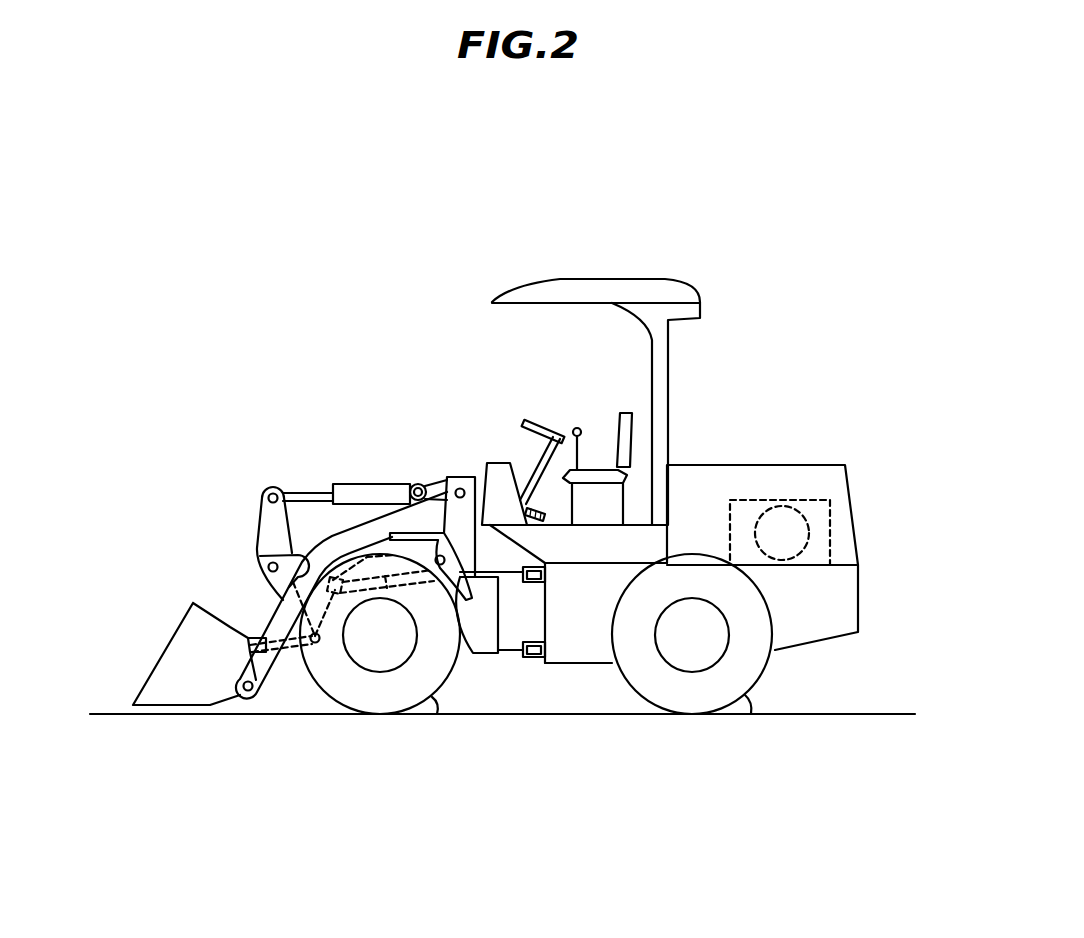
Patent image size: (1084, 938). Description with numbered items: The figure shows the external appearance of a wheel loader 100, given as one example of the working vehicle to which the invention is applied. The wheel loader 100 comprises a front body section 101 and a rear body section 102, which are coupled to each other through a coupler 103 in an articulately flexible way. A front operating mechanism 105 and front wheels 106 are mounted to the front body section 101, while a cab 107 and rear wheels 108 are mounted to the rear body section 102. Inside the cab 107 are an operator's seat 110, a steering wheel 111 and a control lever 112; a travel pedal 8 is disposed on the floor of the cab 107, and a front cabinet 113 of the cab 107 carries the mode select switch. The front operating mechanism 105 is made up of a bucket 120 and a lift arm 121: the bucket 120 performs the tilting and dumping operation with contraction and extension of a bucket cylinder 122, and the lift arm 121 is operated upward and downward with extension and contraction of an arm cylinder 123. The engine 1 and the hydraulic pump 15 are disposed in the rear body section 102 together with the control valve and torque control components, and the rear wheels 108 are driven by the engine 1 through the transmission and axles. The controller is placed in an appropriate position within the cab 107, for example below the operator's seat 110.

The engine 1 is at (797, 500).
The travel pedal 8 is at (537, 509).
The hydraulic pump 15 is at (807, 527).
The wheel loader 100 is at (604, 674).
The front body section 101 is at (482, 653).
The rear body section 102 is at (852, 593).
The coupler 103 is at (532, 657).
The front operating mechanism 105 is at (249, 529).
The front wheels 106 is at (435, 700).
The cab 107 is at (491, 385).
The rear wheels 108 is at (742, 700).
The operator's seat 110 is at (626, 413).
The steering wheel 111 is at (547, 420).
The control lever 112 is at (581, 438).
The front cabinet 113 is at (498, 466).
The bucket 120 is at (193, 600).
The lift arm 121 is at (352, 497).
The bucket cylinder 122 is at (378, 483).
The arm cylinder 123 is at (437, 485).